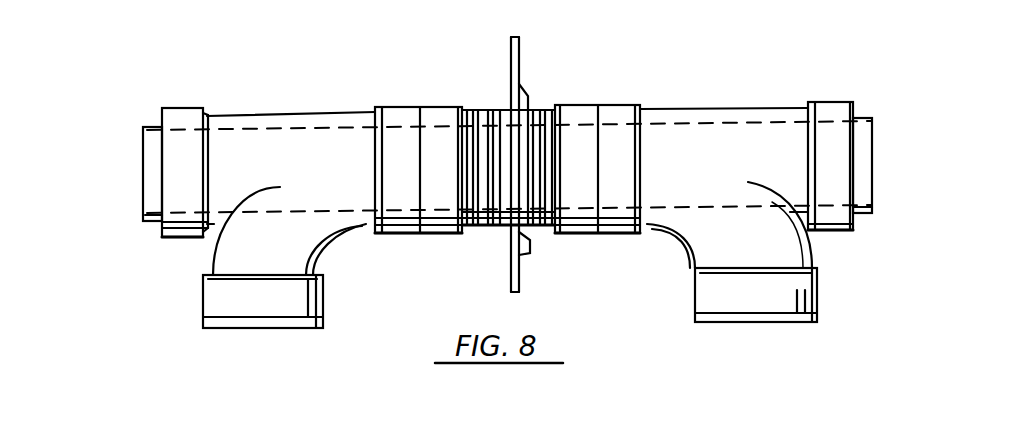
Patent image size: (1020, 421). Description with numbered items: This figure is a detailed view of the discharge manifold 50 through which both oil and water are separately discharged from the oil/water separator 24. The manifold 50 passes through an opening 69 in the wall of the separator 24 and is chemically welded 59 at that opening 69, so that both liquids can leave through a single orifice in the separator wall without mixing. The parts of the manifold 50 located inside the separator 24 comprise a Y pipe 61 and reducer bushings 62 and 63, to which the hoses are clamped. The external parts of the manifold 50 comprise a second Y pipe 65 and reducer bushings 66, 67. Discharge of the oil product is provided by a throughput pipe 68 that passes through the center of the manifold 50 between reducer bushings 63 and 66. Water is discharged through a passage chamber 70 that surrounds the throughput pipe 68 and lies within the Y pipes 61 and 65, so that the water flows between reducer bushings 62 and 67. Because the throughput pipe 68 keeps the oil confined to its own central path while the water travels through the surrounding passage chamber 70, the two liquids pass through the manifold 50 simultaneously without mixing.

The oil/water separator 24 is at (510, 55).
The manifold 50 is at (512, 184).
The chemical weld 59 is at (530, 108).
The Y pipe 61 is at (282, 232).
The reducer bushing 62 is at (223, 328).
The reducer bushing 63 is at (143, 187).
The Y pipe 65 is at (812, 256).
The reducer bushing 66 is at (873, 145).
The reducer bushing 67 is at (803, 322).
The throughput pipe 68 is at (292, 132).
The opening 69 is at (513, 110).
The passage chamber 70 is at (350, 232).